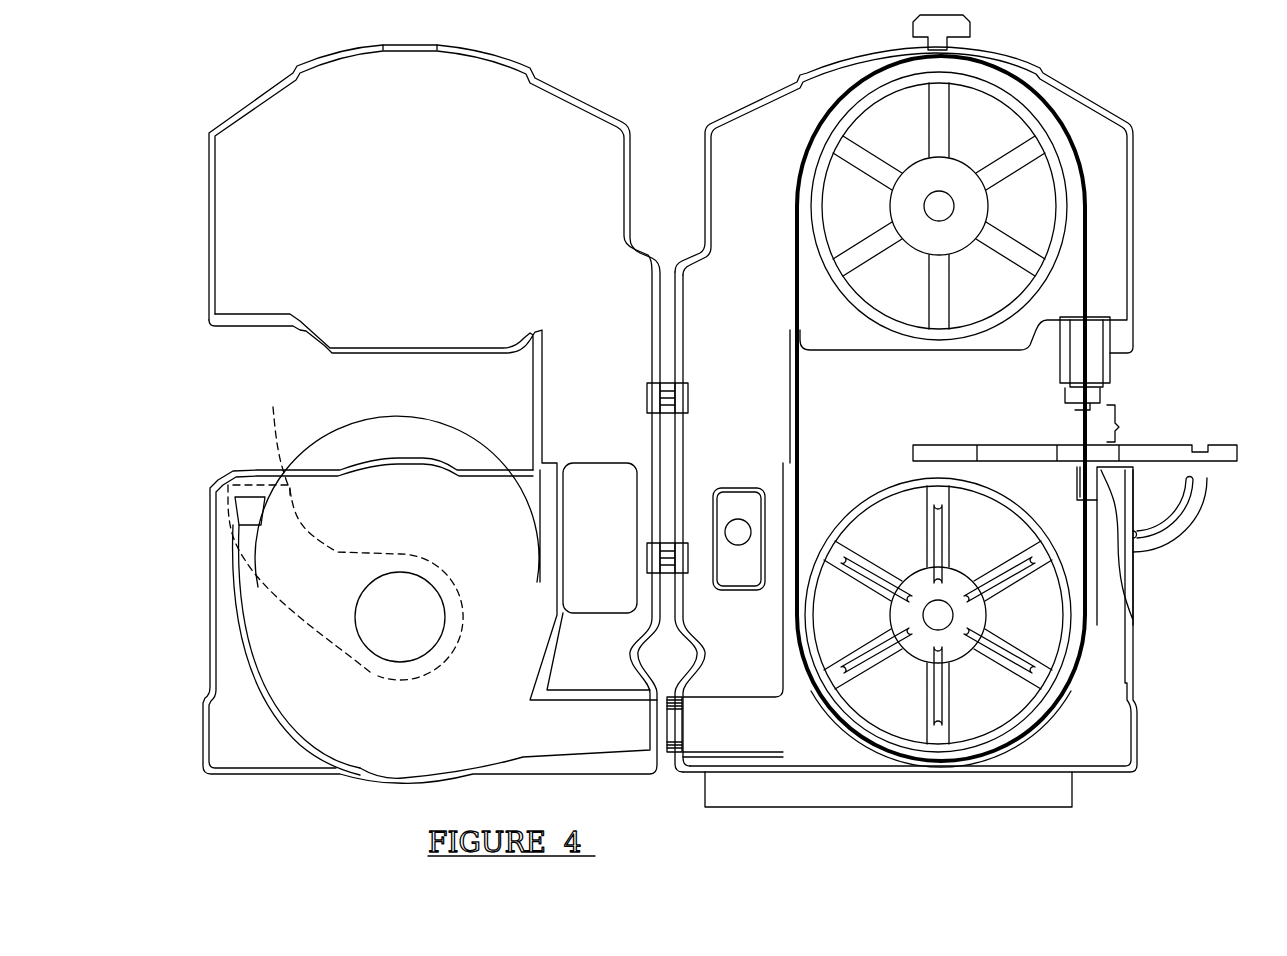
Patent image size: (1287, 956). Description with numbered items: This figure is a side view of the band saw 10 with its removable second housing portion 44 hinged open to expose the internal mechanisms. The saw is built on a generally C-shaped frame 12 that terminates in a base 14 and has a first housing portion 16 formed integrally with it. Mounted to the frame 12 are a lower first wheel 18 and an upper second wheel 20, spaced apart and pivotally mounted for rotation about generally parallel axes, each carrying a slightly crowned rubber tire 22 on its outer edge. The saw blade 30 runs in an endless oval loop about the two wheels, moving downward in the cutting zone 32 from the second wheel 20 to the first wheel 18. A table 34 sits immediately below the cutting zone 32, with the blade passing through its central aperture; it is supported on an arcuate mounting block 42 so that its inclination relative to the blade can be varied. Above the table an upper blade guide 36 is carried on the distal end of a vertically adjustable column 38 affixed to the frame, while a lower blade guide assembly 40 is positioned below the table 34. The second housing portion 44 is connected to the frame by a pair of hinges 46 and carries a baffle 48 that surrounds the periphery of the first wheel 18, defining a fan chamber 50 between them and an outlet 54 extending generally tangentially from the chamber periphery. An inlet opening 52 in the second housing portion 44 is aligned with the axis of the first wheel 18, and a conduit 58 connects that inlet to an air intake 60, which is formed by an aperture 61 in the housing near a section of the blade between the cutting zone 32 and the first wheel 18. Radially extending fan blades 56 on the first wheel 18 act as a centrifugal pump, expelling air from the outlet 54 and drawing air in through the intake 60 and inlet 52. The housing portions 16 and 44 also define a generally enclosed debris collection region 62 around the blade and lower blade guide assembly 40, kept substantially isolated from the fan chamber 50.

The band saw 10 is at (1155, 108).
The frame 12 is at (1067, 78).
The base 14 is at (1047, 808).
The first housing portion 16 is at (1133, 663).
The first wheel 18 is at (1050, 713).
The second wheel 20 is at (1078, 198).
The tire 22 is at (1013, 83).
The saw blade 30 is at (787, 230).
The cutting zone 32 is at (1121, 427).
The table 34 is at (1193, 445).
The upper blade guide 36 is at (1110, 390).
The column 38 is at (1110, 340).
The lower blade guide assembly 40 is at (1125, 568).
The arcuate mounting block 42 is at (1193, 517).
The second housing portion 44 is at (205, 605).
The hinges 46 is at (647, 400).
The baffle 48 is at (260, 690).
The fan chamber 50 is at (893, 700).
The inlet opening 52 is at (397, 657).
The outlet 54 is at (660, 727).
The fan blades 56 is at (947, 700).
The conduit 58 is at (362, 530).
The air intake 60 is at (253, 507).
The aperture 61 is at (240, 510).
The debris collection region 62 is at (1057, 495).